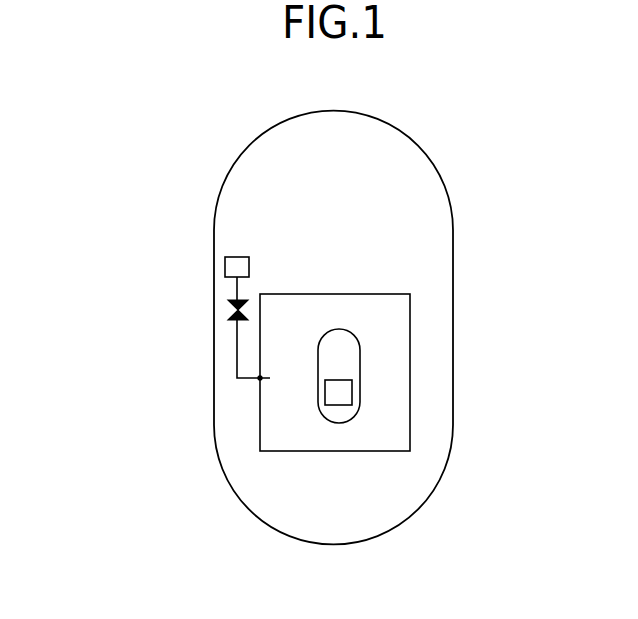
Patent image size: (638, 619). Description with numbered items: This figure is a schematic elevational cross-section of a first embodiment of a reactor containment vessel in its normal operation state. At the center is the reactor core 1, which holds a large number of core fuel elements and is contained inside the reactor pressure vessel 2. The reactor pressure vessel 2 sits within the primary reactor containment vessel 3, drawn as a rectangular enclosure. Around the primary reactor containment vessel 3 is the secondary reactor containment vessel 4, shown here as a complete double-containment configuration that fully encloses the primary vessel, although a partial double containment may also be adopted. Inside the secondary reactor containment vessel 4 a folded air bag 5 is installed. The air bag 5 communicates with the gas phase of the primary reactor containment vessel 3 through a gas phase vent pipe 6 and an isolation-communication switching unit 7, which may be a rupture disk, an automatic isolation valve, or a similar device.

The reactor core 1 is at (343, 387).
The reactor pressure vessel 2 is at (360, 358).
The primary reactor containment vessel 3 is at (410, 312).
The secondary reactor containment vessel 4 is at (430, 155).
The air bag 5 is at (224, 258).
The gas phase vent pipe 6 is at (237, 350).
The isolation-communication switching unit 7 is at (228, 308).